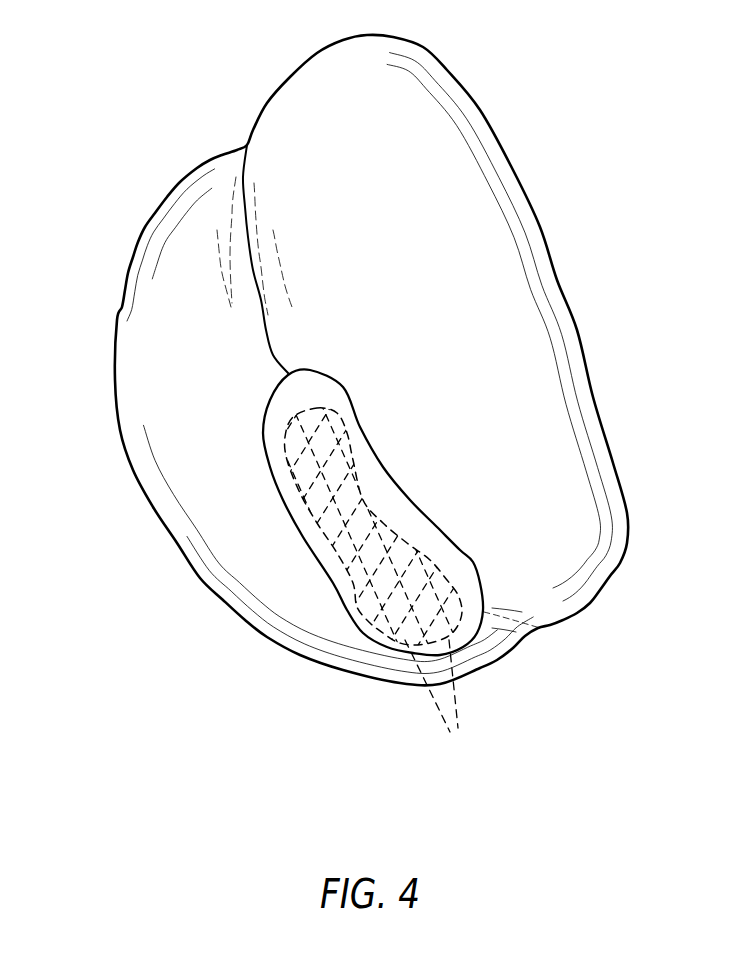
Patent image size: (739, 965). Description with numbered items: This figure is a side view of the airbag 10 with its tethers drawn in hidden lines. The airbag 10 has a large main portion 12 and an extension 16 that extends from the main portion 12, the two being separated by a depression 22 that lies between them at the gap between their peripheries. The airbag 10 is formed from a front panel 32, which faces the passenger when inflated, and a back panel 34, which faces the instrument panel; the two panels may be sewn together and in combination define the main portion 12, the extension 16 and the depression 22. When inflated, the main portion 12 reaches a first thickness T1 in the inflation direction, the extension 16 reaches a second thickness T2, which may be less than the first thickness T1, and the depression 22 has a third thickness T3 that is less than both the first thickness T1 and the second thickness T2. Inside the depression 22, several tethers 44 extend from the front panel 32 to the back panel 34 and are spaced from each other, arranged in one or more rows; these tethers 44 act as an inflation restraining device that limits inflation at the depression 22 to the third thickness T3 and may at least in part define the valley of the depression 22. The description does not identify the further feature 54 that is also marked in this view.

The airbag 10 is at (100, 78).
The main portion 12 is at (378, 182).
The extension 16 is at (433, 550).
The depression 22 is at (353, 617).
The front panel 32 is at (558, 278).
The back panel 34 is at (113, 370).
The tether 44 is at (456, 732).
The hatched insert region 54 is at (292, 464).
The first thickness T1 is at (482, 110).
The second thickness T2 is at (287, 517).
The third thickness T3 is at (400, 537).